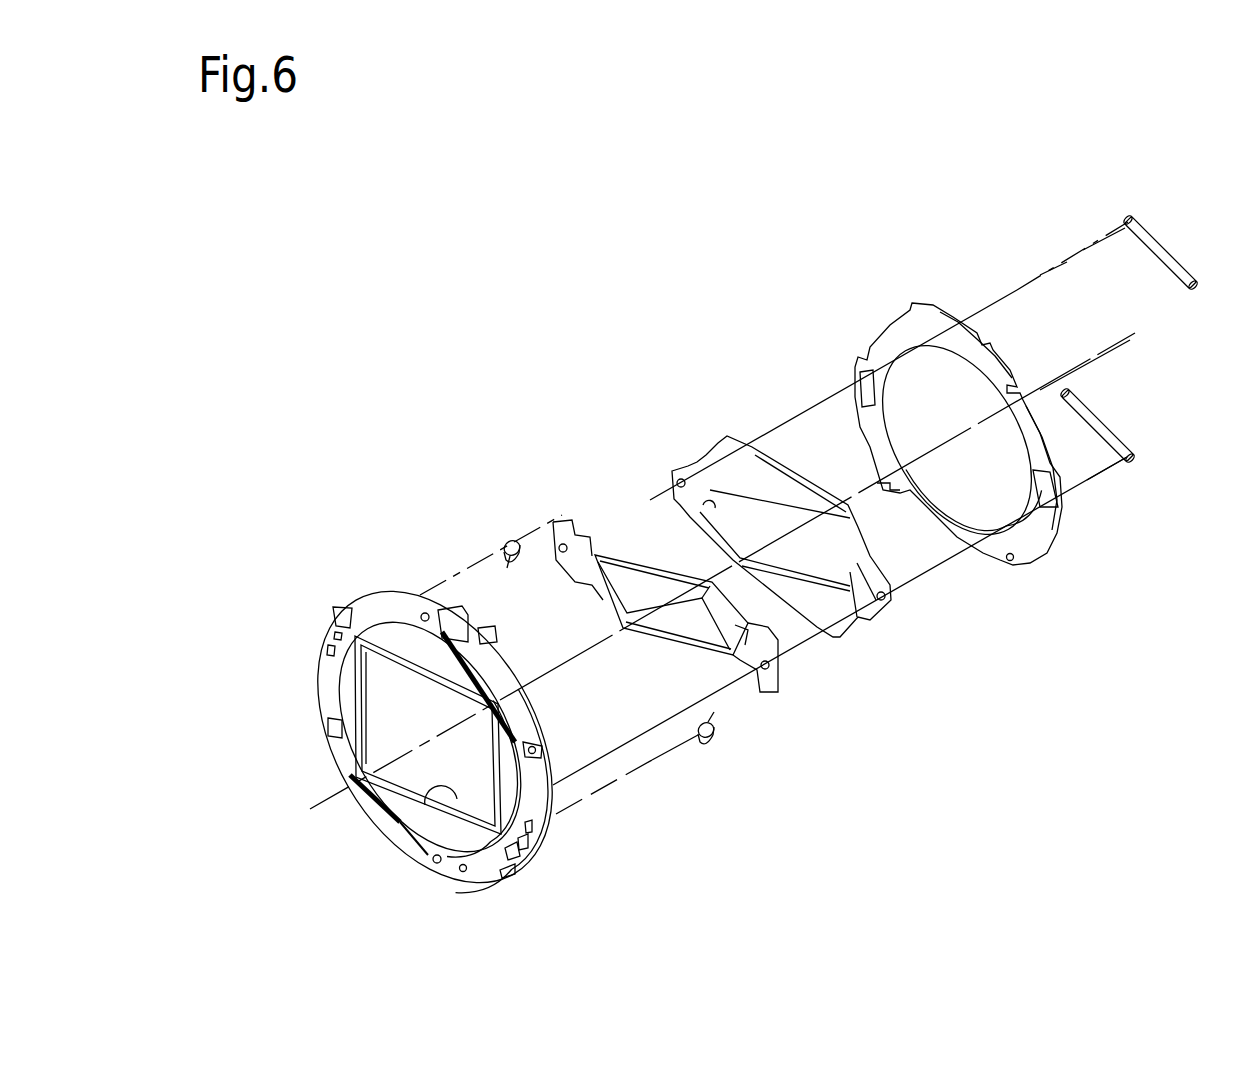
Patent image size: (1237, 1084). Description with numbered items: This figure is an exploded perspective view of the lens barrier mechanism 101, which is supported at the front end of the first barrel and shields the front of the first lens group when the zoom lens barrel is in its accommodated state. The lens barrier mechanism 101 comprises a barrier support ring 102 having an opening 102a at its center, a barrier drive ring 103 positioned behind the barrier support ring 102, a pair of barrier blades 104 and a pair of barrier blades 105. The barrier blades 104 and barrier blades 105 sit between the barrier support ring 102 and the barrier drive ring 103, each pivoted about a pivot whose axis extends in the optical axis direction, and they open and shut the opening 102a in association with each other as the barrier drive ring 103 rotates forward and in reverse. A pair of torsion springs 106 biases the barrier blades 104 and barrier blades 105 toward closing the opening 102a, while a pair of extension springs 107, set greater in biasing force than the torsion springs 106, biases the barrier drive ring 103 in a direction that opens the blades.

The lens barrier mechanism 101 is at (365, 485).
The barrier support ring 102 is at (372, 606).
The opening 102a is at (456, 803).
The barrier drive ring 103 is at (890, 340).
The barrier blades 104 is at (628, 584).
The barrier blades 105 is at (733, 468).
The torsion springs 106 is at (513, 535).
The extension springs 107 is at (1153, 243).